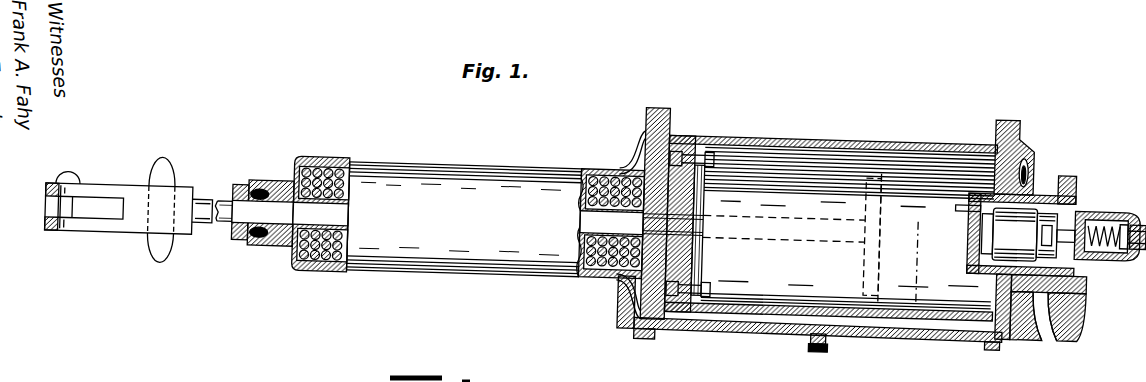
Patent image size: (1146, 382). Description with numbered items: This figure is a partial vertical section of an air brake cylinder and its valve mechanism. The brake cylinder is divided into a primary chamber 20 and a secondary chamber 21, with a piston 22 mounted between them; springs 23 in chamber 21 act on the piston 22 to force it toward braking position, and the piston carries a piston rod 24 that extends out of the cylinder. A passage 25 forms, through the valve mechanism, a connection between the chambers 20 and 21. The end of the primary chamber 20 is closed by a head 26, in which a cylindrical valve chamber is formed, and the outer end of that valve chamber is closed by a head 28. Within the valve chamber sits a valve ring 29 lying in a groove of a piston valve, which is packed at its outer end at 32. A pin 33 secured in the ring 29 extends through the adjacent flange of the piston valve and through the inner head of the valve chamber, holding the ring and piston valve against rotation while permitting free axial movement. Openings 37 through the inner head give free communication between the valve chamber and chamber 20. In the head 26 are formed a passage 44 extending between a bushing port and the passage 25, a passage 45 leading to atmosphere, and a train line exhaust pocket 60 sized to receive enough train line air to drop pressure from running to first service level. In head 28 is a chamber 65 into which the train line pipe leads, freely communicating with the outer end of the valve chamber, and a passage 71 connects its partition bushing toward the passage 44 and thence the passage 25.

The primary chamber 20 is at (840, 144).
The secondary chamber 21 is at (552, 177).
The piston 22 is at (707, 133).
The springs 23 is at (350, 172).
The piston rod 24 is at (222, 239).
The passage 25 is at (625, 294).
The head 26 is at (1017, 122).
The head 28 is at (1112, 250).
The valve ring 29 is at (1028, 235).
The packing 32 is at (1038, 187).
The pin 33 is at (960, 204).
The openings 37 is at (968, 249).
The passage 44 is at (1002, 280).
The passage 45 is at (1038, 277).
The train line exhaust pocket 60 is at (1032, 153).
The chamber 65 is at (1117, 207).
The passage 71 is at (1082, 276).